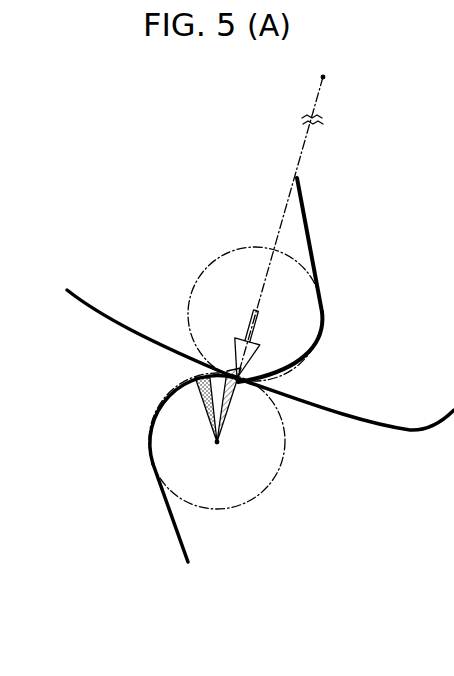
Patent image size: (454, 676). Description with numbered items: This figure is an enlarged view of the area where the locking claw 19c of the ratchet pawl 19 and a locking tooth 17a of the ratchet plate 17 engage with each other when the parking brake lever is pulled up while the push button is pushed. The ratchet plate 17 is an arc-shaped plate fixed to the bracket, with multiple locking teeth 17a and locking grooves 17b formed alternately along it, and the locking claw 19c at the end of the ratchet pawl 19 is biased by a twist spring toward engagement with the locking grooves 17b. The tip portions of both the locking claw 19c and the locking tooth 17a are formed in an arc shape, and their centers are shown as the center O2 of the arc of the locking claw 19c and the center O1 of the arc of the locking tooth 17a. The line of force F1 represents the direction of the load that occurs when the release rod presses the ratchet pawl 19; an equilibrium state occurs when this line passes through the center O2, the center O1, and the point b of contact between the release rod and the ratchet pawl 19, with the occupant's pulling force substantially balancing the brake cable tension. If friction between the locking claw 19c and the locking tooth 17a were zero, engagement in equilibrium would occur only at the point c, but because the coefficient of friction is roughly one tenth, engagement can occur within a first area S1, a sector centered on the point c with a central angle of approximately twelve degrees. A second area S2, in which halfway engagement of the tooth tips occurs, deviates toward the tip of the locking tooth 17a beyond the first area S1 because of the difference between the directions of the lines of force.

The ratchet plate 17 is at (172, 540).
The locking tooth 17a is at (153, 413).
The locking groove 17b is at (437, 415).
The ratchet pawl 19 is at (312, 225).
The locking claw 19c is at (312, 351).
The point of contact between the ratchet pawl and the release rod b is at (324, 76).
The point c is at (240, 378).
The line of force F1 is at (266, 266).
The center of the arc of the locking tooth O1 is at (217, 443).
The center of the arc of the locking claw O2 is at (253, 308).
The first area S1 is at (237, 393).
The second area S2 is at (210, 395).